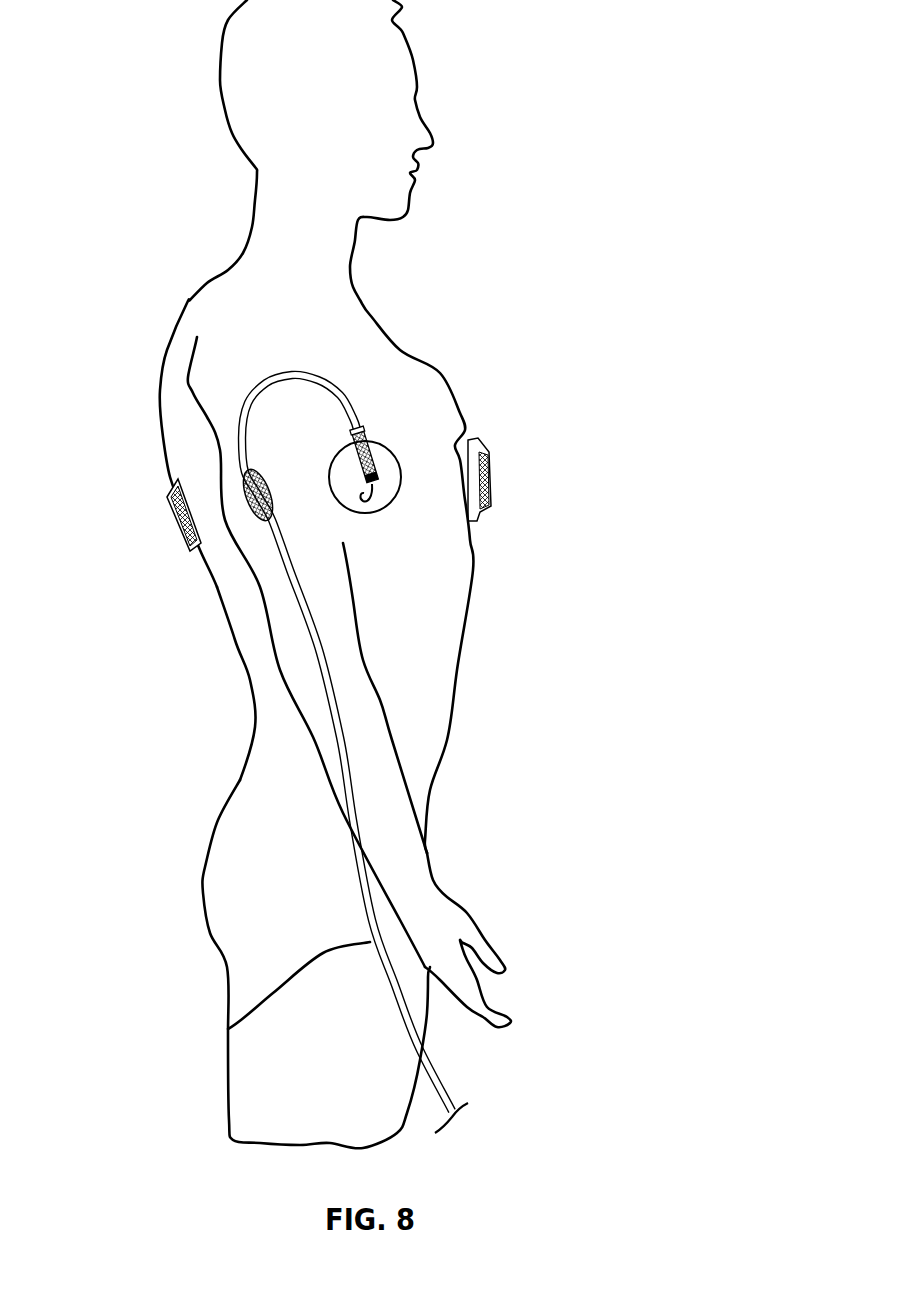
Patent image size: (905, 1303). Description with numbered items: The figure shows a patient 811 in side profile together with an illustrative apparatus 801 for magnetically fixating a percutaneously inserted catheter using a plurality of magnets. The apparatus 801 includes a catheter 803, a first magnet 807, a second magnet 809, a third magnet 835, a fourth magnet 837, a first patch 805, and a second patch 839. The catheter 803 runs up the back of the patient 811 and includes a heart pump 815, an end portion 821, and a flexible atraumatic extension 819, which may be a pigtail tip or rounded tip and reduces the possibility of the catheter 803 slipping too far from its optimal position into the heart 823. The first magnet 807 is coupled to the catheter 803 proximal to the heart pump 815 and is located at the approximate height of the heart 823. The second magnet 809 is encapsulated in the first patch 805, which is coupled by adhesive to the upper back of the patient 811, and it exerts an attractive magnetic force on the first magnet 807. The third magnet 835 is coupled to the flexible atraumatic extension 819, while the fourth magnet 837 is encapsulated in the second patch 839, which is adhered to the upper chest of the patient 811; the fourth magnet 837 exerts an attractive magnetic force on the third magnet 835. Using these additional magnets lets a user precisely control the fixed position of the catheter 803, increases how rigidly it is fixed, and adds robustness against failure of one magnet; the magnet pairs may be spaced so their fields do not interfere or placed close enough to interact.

The apparatus 801 is at (136, 303).
The catheter 803 is at (228, 1029).
The first patch 805 is at (167, 498).
The first magnet 807 is at (272, 490).
The second magnet 809 is at (182, 535).
The patient 811 is at (247, 677).
The heart pump 815 is at (387, 453).
The flexible atraumatic extension 819 is at (367, 512).
The end portion 821 is at (388, 432).
The heart 823 is at (370, 510).
The third magnet 835 is at (377, 483).
The fourth magnet 837 is at (490, 493).
The second patch 839 is at (488, 482).